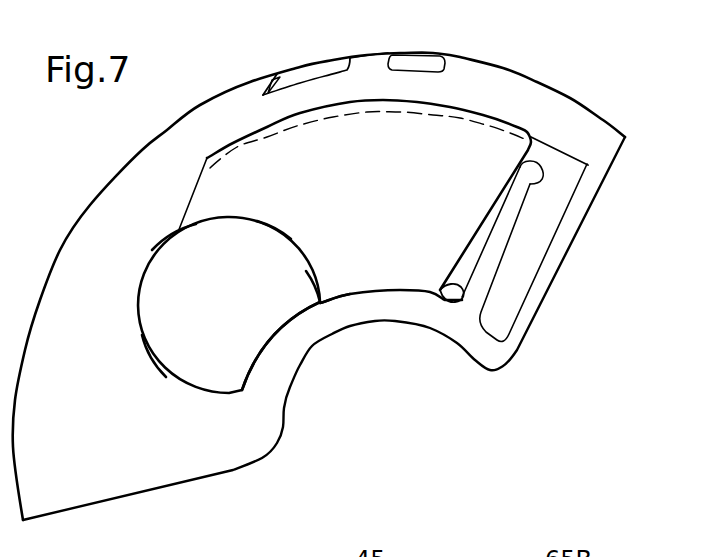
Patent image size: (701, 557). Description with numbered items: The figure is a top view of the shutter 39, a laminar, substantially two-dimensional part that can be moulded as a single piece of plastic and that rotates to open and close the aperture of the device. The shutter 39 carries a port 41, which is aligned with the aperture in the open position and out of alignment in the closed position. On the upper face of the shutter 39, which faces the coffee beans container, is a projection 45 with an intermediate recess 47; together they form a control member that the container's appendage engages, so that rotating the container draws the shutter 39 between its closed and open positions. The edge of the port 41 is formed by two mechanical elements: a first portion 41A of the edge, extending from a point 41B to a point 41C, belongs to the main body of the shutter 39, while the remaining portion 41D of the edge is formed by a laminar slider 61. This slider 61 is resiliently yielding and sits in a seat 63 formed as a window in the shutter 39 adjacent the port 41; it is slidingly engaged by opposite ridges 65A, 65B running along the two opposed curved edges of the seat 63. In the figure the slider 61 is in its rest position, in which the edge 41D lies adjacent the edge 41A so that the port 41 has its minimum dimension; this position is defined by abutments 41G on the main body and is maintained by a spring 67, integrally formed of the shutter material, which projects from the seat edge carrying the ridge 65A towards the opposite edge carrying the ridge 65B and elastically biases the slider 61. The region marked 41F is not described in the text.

The shutter 39 is at (187, 483).
The port 41 is at (232, 314).
The first portion of the edge 41A is at (151, 352).
The point 41B is at (142, 272).
The point 41C is at (319, 300).
The remaining portion of the edge 41D is at (265, 236).
The opening edge portion 41F is at (314, 307).
The abutments 41G is at (318, 306).
The projection 45 is at (312, 70).
The intermediate recess 47 is at (370, 57).
The laminar slider 61 is at (406, 196).
The seat 63 is at (561, 213).
The ridge 65A is at (455, 303).
The ridge 65B is at (563, 152).
The spring 67 is at (504, 222).